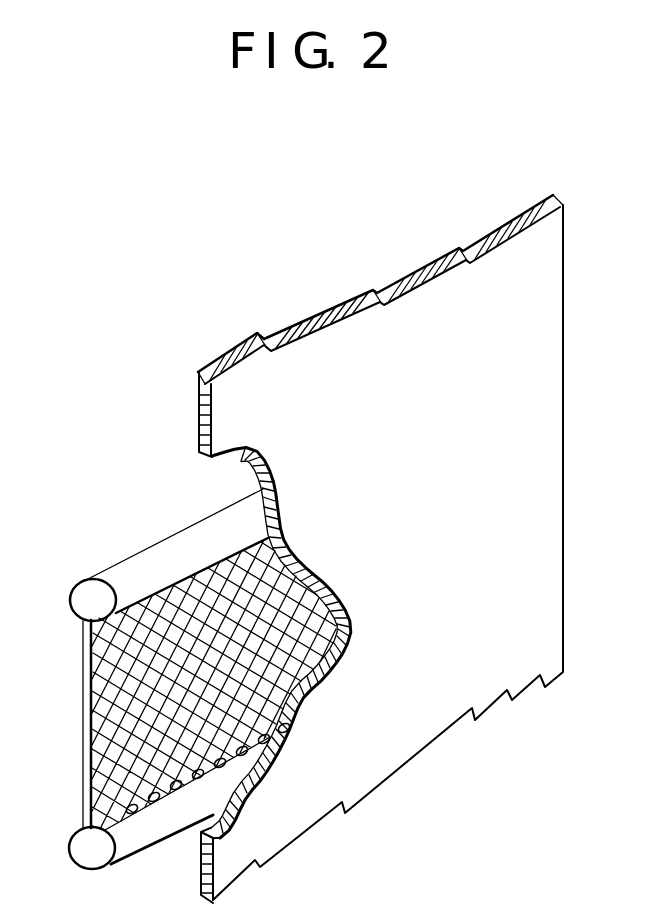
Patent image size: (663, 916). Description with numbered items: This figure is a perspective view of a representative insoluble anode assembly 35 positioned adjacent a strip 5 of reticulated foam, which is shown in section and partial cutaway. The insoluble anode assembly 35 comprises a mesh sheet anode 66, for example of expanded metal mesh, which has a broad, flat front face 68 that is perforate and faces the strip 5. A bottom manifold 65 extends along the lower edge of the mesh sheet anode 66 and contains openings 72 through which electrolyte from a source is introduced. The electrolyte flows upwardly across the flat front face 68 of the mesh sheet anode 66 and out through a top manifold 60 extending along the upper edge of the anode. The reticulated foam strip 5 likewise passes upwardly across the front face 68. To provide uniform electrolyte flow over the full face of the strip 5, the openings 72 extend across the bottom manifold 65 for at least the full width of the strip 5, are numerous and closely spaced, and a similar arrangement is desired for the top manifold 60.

The strip 5 is at (565, 426).
The insoluble anode assembly 35 is at (112, 515).
The top manifold 60 is at (72, 590).
The bottom manifold 65 is at (83, 862).
The mesh sheet anode 66 is at (82, 757).
The front face 68 is at (113, 703).
The openings 72 is at (132, 813).